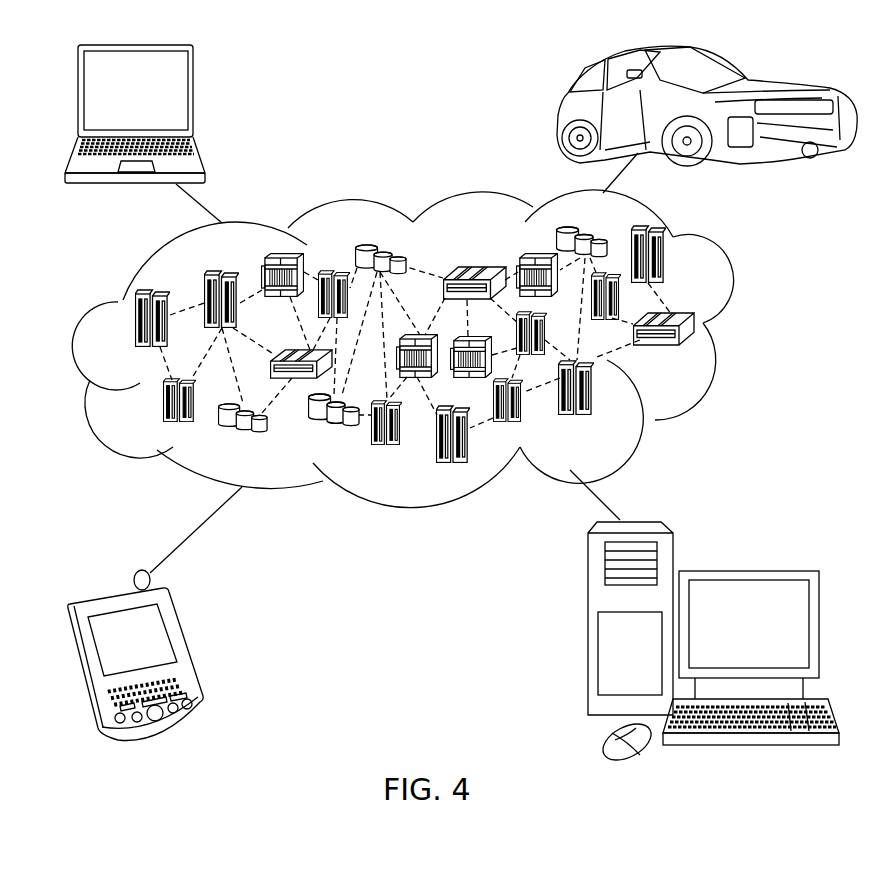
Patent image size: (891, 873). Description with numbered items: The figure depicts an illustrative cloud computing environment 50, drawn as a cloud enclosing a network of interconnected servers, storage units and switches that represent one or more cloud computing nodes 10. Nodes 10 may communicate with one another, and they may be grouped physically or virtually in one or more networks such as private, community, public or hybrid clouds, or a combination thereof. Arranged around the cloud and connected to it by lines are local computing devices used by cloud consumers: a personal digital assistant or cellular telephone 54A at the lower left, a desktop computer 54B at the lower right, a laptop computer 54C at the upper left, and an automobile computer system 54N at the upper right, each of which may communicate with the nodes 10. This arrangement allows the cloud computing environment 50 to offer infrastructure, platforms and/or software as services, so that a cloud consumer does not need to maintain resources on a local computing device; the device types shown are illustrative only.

The cloud computing node 10 is at (700, 353).
The cloud computing environment 50 is at (747, 328).
The personal digital assistant (PDA) or cellular telephone 54A is at (186, 651).
The desktop computer 54B is at (746, 570).
The laptop computer 54C is at (193, 96).
The automobile computer system 54N is at (563, 112).